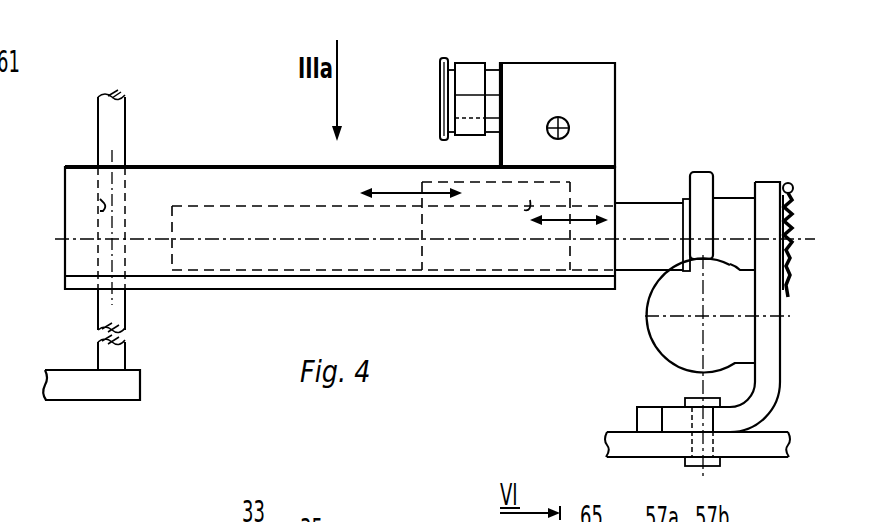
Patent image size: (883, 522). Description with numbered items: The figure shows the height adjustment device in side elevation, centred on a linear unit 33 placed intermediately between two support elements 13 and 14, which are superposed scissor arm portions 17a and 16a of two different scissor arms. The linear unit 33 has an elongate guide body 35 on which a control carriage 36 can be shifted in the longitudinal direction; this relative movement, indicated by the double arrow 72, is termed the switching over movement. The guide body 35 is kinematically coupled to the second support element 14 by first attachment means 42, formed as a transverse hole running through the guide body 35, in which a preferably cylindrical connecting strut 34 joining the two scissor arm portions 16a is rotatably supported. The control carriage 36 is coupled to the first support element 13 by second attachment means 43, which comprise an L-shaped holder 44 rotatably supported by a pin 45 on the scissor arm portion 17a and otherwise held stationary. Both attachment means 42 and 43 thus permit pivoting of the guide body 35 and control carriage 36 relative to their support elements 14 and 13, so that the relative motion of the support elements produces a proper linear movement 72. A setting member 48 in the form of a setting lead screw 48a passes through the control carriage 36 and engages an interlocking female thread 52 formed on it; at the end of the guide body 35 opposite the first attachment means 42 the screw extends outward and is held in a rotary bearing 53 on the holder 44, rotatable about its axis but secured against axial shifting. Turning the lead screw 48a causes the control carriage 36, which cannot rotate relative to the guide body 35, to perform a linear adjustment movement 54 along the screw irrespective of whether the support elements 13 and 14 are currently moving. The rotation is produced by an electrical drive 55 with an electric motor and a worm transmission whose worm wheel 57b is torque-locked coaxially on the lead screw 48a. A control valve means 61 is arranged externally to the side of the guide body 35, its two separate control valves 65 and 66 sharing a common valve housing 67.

The first support element 13 is at (656, 417).
The scissor arm portion 17a is at (607, 440).
The second support element 14 is at (91, 416).
The scissor arm portion 16a is at (70, 392).
The linear unit 33 is at (276, 296).
The connecting strut 34 is at (125, 330).
The guide body 35 is at (240, 176).
The control carriage 36 is at (490, 252).
The first attachment means 42 is at (100, 211).
The second attachment means 43 is at (720, 440).
The holder 44 is at (770, 323).
The pin 45 is at (692, 425).
The setting member 48 is at (435, 193).
The setting lead screw 48a is at (647, 215).
The female thread 52 is at (530, 200).
The rotary bearing 53 is at (769, 196).
The adjustment movement 54 is at (560, 222).
The electrical drive 55 is at (646, 338).
The worm wheel 57b is at (712, 185).
The control valve means 61 is at (610, 79).
The control valve 65 is at (614, 84).
The control valve 66 is at (614, 84).
The valve housing 67 is at (605, 110).
The switching over movement 72 is at (403, 190).